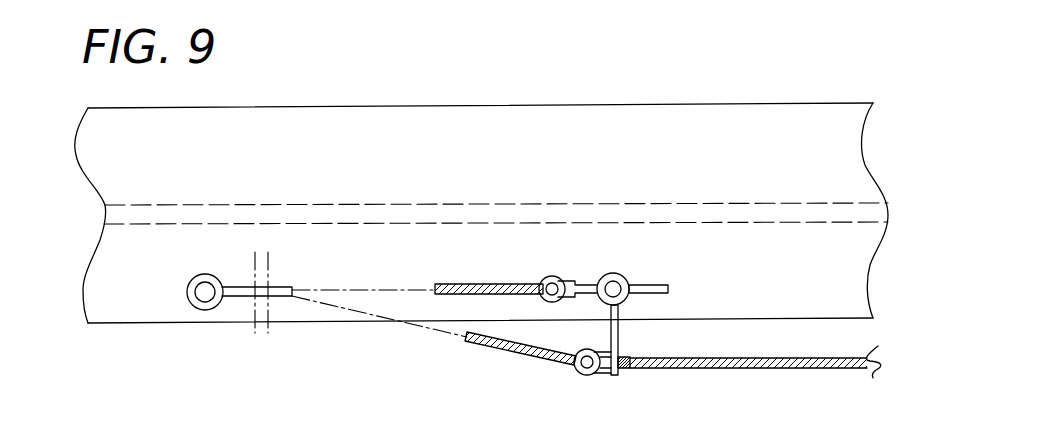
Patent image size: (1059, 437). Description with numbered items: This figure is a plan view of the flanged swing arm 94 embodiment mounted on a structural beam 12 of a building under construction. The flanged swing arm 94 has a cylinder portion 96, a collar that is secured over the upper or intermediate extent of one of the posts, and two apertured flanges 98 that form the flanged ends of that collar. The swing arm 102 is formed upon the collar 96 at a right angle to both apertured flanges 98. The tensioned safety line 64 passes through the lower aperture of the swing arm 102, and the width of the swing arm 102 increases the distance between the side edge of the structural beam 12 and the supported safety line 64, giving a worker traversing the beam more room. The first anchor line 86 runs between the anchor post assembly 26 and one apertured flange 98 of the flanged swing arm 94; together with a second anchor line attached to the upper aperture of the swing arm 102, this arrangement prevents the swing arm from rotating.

The structural beam 12 is at (367, 166).
The anchor post assembly 26 is at (207, 260).
The tensioned safety line 64 is at (771, 368).
The first anchor line 86 is at (455, 283).
The flanged swing arm 94 is at (622, 258).
The cylinder portion 96 is at (603, 276).
The apertured flanges 98 is at (583, 281).
The swing arm 102 is at (615, 331).